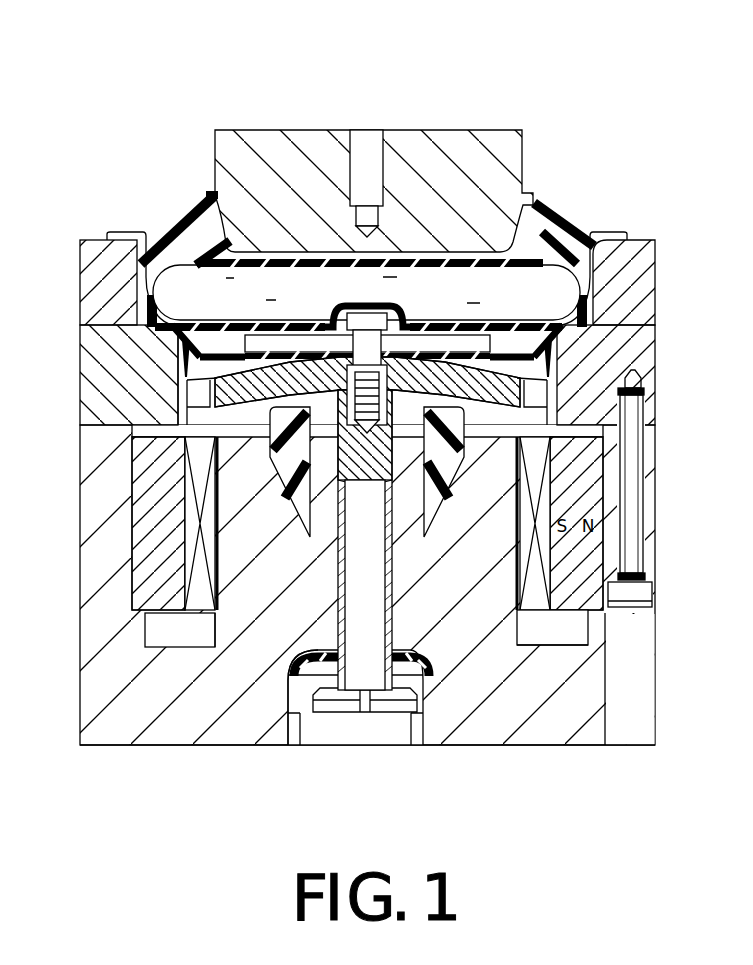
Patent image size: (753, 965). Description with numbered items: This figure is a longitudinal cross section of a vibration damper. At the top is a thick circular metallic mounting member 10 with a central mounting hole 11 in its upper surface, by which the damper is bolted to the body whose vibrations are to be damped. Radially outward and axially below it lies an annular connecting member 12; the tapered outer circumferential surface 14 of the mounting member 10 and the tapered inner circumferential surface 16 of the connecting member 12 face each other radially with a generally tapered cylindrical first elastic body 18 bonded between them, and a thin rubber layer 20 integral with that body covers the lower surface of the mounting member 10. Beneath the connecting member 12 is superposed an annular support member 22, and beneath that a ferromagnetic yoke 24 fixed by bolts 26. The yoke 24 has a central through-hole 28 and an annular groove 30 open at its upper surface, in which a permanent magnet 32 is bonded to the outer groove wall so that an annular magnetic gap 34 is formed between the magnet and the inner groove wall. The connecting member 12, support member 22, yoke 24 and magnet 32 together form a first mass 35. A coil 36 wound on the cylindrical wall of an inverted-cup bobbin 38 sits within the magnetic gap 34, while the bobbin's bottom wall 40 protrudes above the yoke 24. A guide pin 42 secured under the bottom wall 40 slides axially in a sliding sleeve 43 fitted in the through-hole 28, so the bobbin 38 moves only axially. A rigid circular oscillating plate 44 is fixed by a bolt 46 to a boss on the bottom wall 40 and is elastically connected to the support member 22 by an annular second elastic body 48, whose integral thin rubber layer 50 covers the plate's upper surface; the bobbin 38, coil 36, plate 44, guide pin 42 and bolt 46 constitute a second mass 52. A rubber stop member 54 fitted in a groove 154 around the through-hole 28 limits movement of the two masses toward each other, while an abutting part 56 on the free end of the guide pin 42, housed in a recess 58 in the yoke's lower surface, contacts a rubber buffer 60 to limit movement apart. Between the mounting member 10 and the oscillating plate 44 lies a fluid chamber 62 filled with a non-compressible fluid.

The mounting member 10 is at (488, 130).
The mounting hole 11 is at (366, 130).
The connecting member 12 is at (88, 258).
The tapered outer circumferential surface 14 is at (207, 230).
The tapered inner circumferential surface 16 is at (146, 228).
The first elastic body 18 is at (537, 205).
The thin rubber layer 20 is at (430, 257).
The support member 22 is at (93, 370).
The yoke 24 is at (93, 678).
The bolts 26 is at (637, 523).
The through-hole 28 is at (293, 632).
The annular groove 30 is at (552, 630).
The permanent magnet 32 is at (133, 553).
The annular magnetic gap 34 is at (193, 497).
The first mass 35 is at (111, 775).
The coil 36 is at (558, 604).
The bobbin 38 is at (565, 388).
The bottom wall 40 is at (575, 296).
The guide pin 42 is at (387, 620).
The sliding sleeve 43 is at (218, 647).
The oscillating plate 44 is at (292, 340).
The bolt 46 is at (385, 280).
The second elastic body 48 is at (513, 327).
The thin rubber layer 50 is at (350, 312).
The second mass 52 is at (193, 630).
The rubber stop member 54 is at (548, 408).
The abutting part 56 is at (340, 708).
The recess 58 is at (293, 722).
The rubber buffer 60 is at (423, 672).
The fluid chamber 62 is at (188, 283).
The groove 154 is at (480, 452).